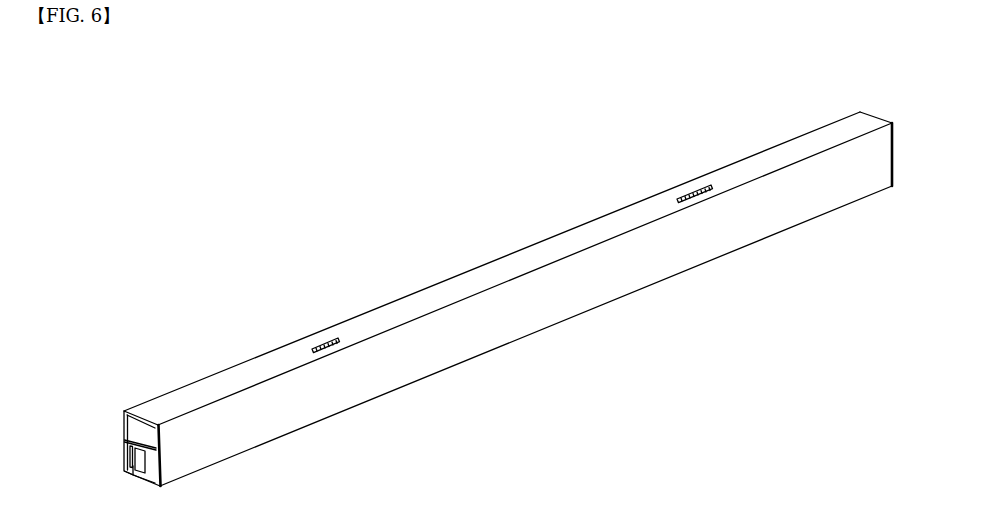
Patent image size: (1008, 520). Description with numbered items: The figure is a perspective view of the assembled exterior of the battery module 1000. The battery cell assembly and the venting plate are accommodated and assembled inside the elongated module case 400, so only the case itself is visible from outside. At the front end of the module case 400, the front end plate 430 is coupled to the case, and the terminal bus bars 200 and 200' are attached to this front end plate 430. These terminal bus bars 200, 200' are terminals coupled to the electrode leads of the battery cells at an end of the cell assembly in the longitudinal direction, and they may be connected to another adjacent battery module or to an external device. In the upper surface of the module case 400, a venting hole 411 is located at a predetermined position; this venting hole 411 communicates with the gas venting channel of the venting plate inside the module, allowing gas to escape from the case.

The battery module 1000 is at (763, 98).
The module case 400 is at (499, 253).
The venting hole 411 is at (326, 336).
The front end plate 430 is at (133, 424).
The terminal bus bar 200 is at (93, 455).
The terminal bus bar 200' is at (98, 465).